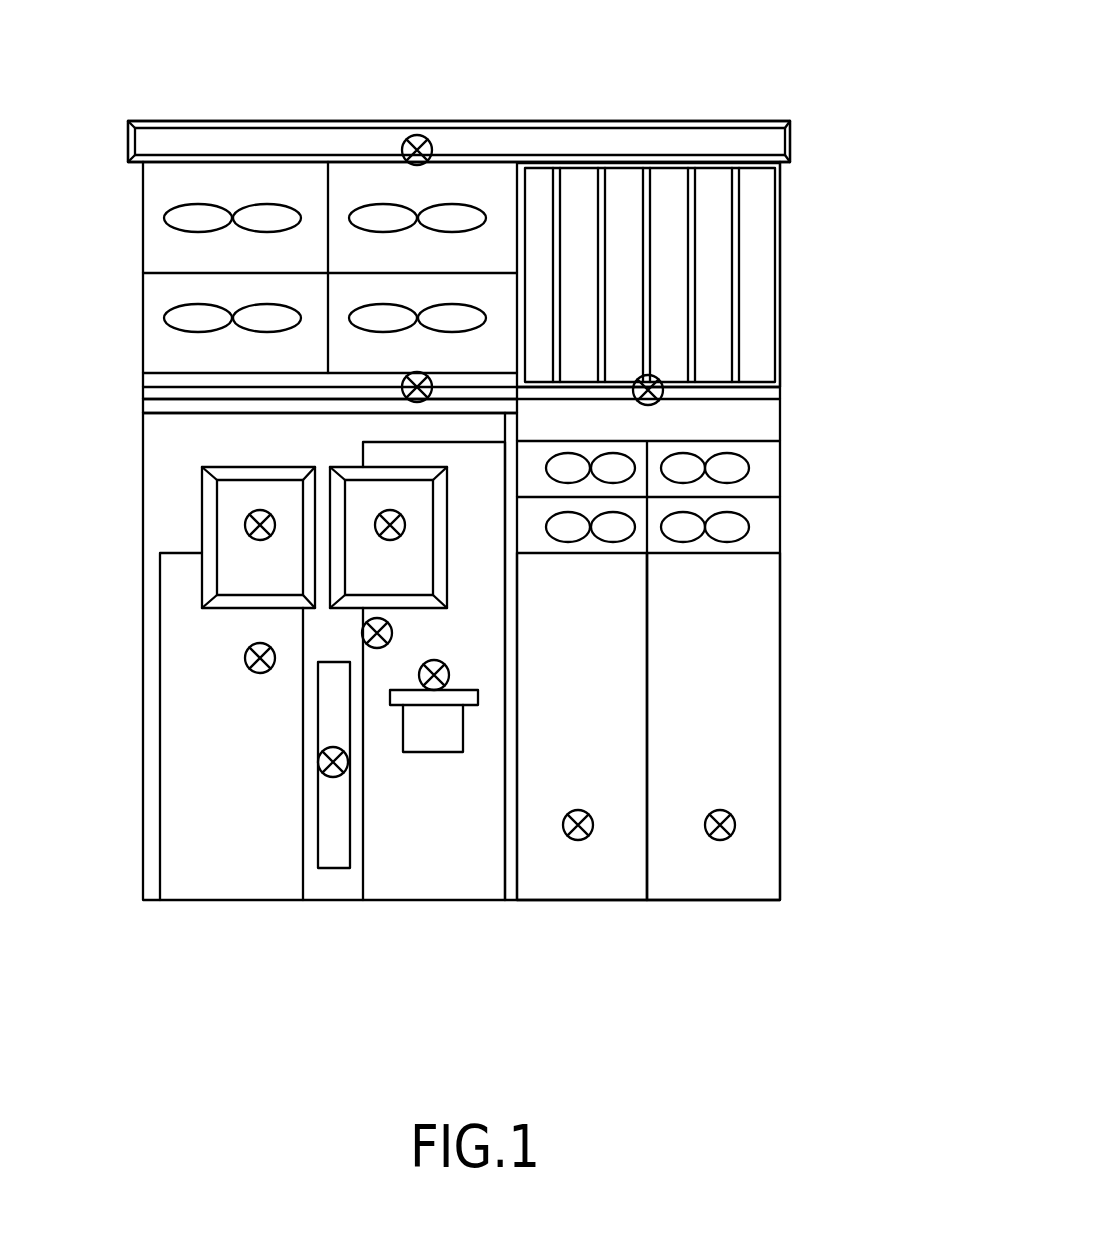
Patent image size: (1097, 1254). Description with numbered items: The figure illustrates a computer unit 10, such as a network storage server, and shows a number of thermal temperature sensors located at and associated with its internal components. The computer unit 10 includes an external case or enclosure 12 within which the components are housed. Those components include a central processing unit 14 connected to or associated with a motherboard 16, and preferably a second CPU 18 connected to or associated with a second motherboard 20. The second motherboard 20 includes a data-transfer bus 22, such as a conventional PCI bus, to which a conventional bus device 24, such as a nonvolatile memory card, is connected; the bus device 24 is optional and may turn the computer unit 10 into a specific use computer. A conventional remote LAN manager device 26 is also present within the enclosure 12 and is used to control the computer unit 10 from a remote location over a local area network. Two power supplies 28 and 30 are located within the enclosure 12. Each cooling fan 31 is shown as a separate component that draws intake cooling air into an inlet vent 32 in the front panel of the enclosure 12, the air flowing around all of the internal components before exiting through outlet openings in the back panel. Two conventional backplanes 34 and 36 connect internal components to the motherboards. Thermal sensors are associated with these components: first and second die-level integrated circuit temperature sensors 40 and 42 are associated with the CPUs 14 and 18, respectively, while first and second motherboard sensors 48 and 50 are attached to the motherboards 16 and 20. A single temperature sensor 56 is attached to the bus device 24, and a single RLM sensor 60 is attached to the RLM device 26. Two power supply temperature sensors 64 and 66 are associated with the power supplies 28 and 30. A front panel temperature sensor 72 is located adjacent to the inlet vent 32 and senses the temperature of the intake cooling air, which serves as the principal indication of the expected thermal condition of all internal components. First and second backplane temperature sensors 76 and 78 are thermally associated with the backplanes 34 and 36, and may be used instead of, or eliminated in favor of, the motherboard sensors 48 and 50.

The computer unit 10 is at (858, 92).
The enclosure 12 is at (143, 455).
The central processing unit 14 is at (230, 495).
The motherboard 16 is at (178, 598).
The second CPU 18 is at (362, 492).
The second motherboard 20 is at (478, 468).
The data-transfer bus 22 is at (470, 708).
The bus device 24 is at (412, 740).
The remote LAN manager device 26 is at (343, 855).
The power supply 28 is at (608, 883).
The power supply 30 is at (698, 887).
The fan 31 is at (168, 318).
The inlet vent 32 is at (505, 140).
The backplane 34 is at (143, 408).
The backplane 36 is at (780, 388).
The die-level integrated circuit temperature sensor 40 is at (245, 525).
The die-level integrated circuit temperature sensor 42 is at (405, 535).
The motherboard sensor 48 is at (362, 633).
The motherboard sensor 50 is at (245, 658).
The bus device sensor 56 is at (445, 663).
The RLM sensor 60 is at (318, 760).
The power supply temperature sensor 64 is at (575, 842).
The power supply temperature sensor 66 is at (735, 822).
The front panel temperature sensor 72 is at (408, 137).
The backplane temperature sensor 76 is at (403, 387).
The backplane temperature sensor 78 is at (660, 383).